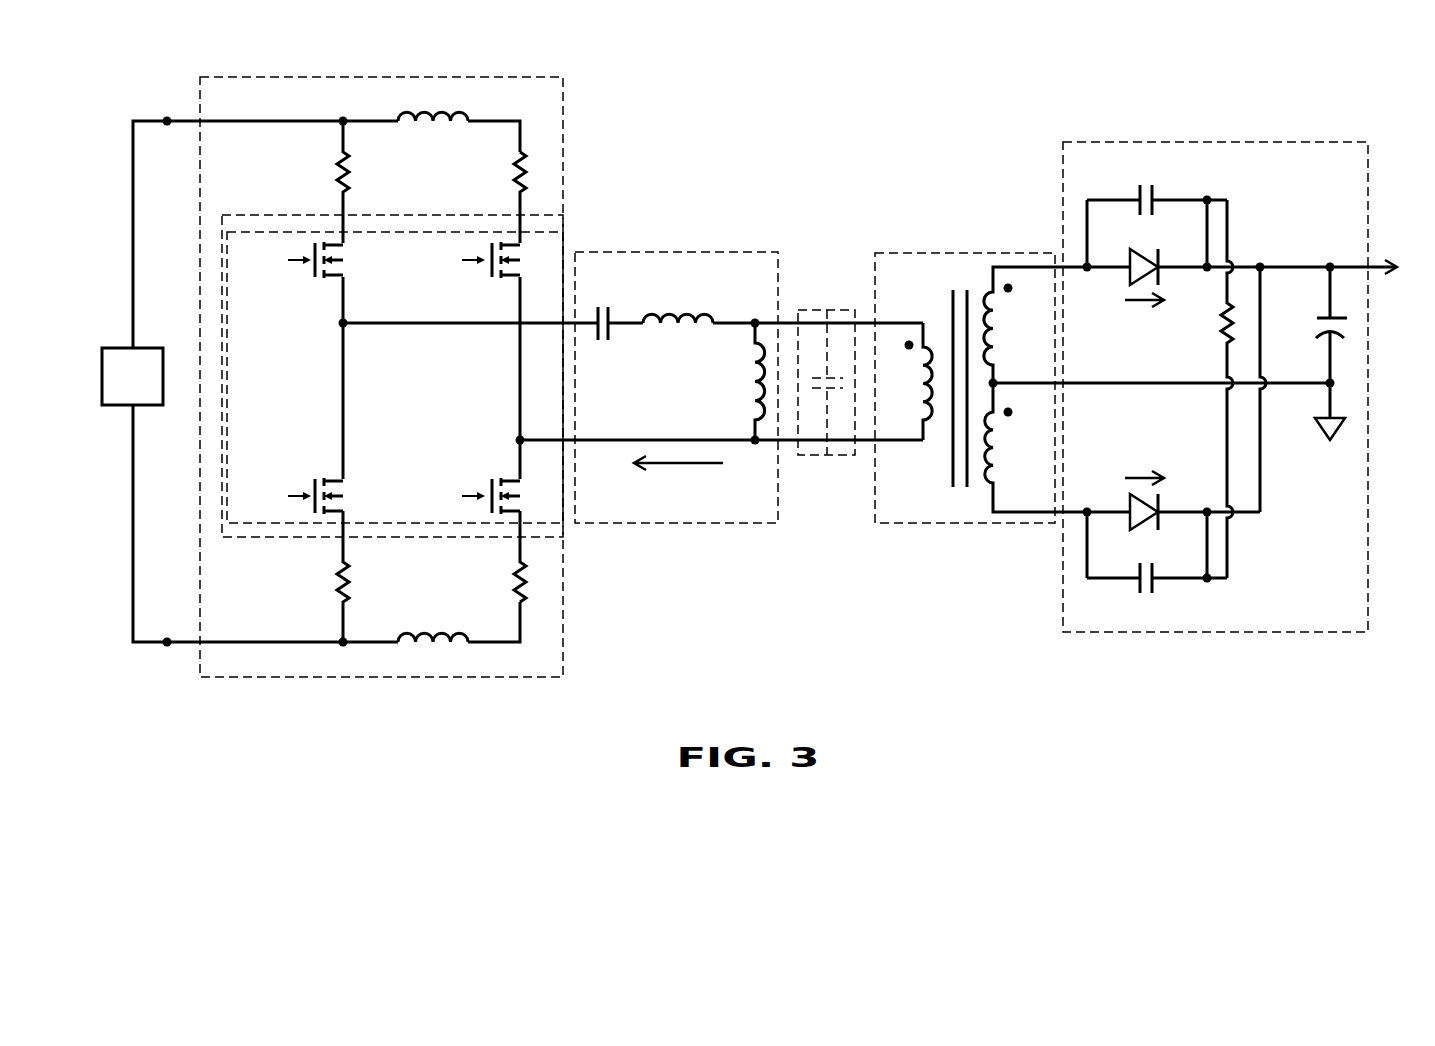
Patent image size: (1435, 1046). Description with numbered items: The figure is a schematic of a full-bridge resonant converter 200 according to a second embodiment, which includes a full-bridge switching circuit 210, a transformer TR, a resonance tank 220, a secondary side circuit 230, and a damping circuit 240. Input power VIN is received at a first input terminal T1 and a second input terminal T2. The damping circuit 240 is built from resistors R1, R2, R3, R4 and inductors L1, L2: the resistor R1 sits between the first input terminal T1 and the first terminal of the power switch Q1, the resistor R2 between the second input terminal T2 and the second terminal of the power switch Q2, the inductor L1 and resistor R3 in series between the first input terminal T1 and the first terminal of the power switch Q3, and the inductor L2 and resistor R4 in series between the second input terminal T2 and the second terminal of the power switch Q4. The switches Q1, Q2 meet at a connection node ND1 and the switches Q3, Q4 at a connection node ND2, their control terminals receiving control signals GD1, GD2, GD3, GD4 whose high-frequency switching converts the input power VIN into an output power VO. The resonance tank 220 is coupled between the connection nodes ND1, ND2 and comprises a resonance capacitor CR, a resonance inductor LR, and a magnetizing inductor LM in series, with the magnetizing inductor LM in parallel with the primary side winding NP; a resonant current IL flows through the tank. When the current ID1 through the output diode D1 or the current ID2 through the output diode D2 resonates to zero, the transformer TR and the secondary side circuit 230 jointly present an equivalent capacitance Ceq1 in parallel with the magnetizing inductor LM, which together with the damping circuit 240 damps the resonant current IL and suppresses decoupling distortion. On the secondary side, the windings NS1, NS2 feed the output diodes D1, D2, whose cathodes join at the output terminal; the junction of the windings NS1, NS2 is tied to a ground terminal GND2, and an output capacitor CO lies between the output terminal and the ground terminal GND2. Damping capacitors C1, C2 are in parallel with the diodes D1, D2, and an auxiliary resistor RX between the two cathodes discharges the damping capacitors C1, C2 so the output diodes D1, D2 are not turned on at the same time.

The full-bridge resonant converter 200 is at (1370, 692).
The full-bridge switching circuit 210 is at (563, 233).
The resonance tank 220 is at (687, 252).
The secondary side circuit 230 is at (1213, 142).
The damping circuit 240 is at (535, 77).
The transformer TR is at (952, 253).
The input power VIN is at (132, 376).
The first input terminal T1 is at (167, 103).
The second input terminal T2 is at (167, 657).
The inductor L1 is at (433, 101).
The inductor L2 is at (433, 620).
The resistor R1 is at (325, 182).
The resistor R2 is at (325, 576).
The resistor R3 is at (501, 197).
The resistor R4 is at (501, 557).
The power switch Q1 is at (345, 260).
The second power switch Q2 is at (345, 496).
The third power switch Q3 is at (522, 260).
The fourth power switch Q4 is at (522, 496).
The control signal GD1 is at (273, 261).
The control signal GD2 is at (273, 497).
The control signal GD3 is at (448, 261).
The control signal GD4 is at (448, 497).
The connection node ND1 is at (319, 324).
The connection node ND2 is at (493, 441).
The resonance capacitor CR is at (603, 342).
The resonance inductor LR is at (678, 303).
The magnetizing inductor LM is at (741, 382).
The resonant current IL is at (678, 479).
The equivalent capacitance Ceq1 is at (827, 455).
The primary side winding NP is at (908, 381).
The secondary side winding NS1 is at (1035, 325).
The secondary side winding NS2 is at (1036, 447).
The damping capacitor C1 is at (1157, 184).
The damping capacitor C2 is at (1157, 595).
The output diode D1 is at (1208, 259).
The output diode D2 is at (1173, 523).
The current ID1 is at (1145, 318).
The current ID2 is at (1145, 464).
The auxiliary resistor RX is at (1208, 389).
The output capacitor CO is at (1312, 325).
The output power VO is at (1382, 268).
The ground terminal GND2 is at (1332, 433).